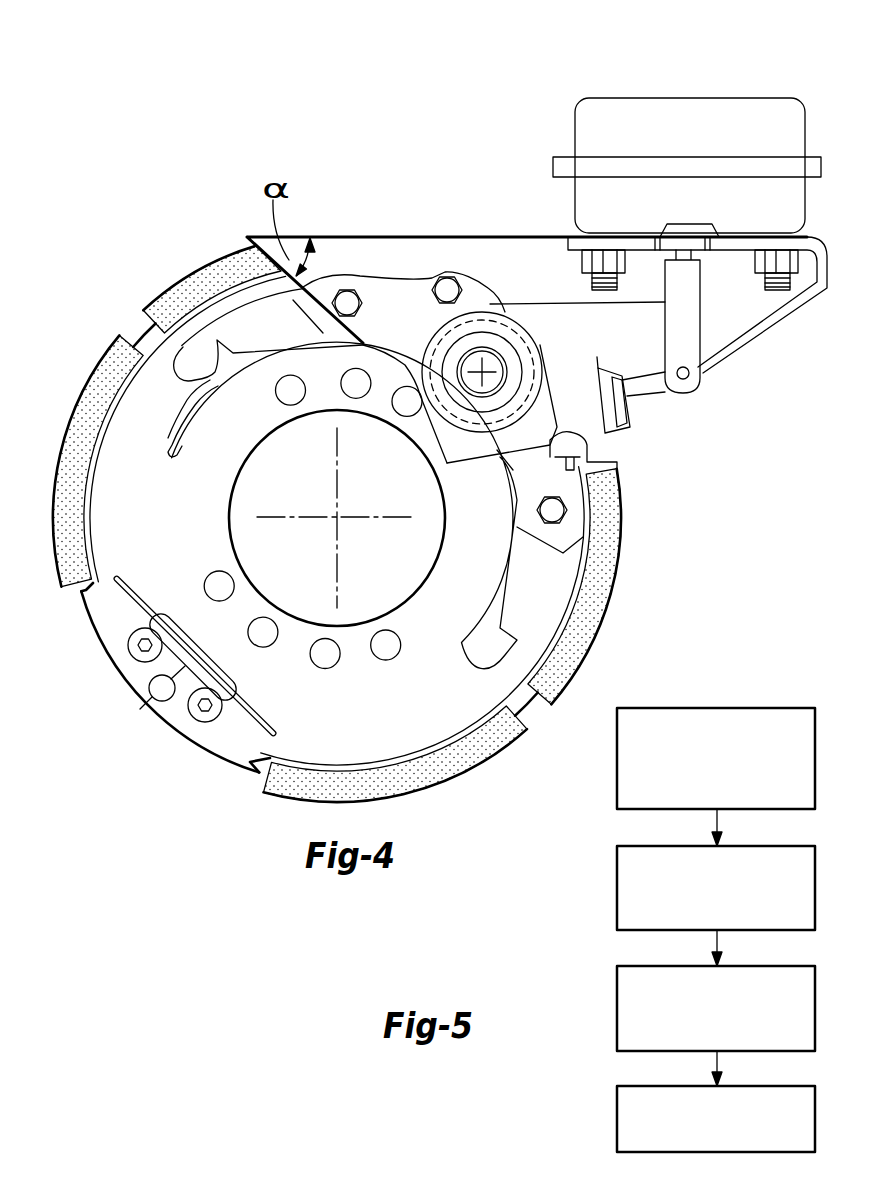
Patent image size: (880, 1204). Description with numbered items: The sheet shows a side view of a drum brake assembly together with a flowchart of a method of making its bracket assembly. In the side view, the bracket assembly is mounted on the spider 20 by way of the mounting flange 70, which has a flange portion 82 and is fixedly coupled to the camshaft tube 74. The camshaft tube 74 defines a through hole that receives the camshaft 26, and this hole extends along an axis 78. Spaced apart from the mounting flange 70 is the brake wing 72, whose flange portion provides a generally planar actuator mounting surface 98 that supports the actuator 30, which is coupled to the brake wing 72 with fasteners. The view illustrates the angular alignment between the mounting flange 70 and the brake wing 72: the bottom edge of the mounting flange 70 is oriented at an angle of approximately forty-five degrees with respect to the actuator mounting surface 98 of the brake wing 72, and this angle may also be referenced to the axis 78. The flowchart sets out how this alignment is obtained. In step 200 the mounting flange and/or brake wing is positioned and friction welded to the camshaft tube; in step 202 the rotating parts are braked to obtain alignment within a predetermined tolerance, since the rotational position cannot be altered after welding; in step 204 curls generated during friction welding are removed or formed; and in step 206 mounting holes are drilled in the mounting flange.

In FIG. 4, the spider 20 is at (153, 418).
In FIG. 4, the camshaft 26 is at (443, 410).
In FIG. 4, the actuator 30 is at (710, 113).
In FIG. 4, the mounting flange 70 is at (388, 273).
In FIG. 4, the brake wing 72 is at (723, 353).
In FIG. 4, the camshaft tube 74 is at (480, 318).
In FIG. 4, the axis 78 is at (443, 410).
In FIG. 4, the flange portion 82 is at (607, 507).
In FIG. 4, the actuator mounting surface 98 is at (773, 233).
In FIG. 5, the method step 200 is at (617, 758).
In FIG. 5, the method step 202 is at (617, 886).
In FIG. 5, the method step 204 is at (617, 1008).
In FIG. 5, the method step 206 is at (617, 1118).